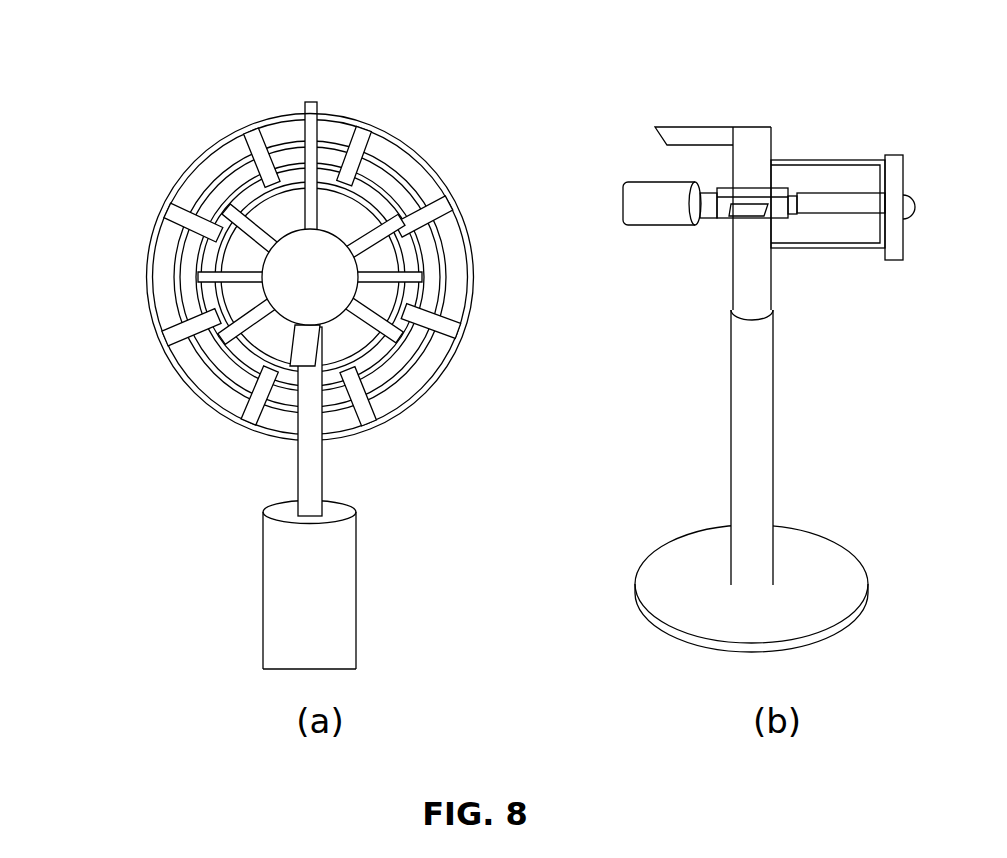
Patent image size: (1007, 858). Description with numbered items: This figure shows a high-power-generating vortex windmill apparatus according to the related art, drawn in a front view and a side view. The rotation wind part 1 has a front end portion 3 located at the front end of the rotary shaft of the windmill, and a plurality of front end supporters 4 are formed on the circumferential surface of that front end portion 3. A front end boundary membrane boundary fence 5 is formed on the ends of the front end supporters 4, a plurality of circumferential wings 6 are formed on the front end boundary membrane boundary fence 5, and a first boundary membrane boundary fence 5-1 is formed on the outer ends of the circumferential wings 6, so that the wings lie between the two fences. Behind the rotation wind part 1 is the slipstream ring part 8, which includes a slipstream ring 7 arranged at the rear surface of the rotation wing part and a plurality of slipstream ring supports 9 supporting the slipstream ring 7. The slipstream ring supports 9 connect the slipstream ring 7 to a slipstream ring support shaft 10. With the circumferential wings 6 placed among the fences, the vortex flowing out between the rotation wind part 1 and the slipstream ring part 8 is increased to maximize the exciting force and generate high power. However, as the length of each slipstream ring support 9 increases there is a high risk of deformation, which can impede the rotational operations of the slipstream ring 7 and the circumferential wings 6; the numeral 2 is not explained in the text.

The rotation wind part 1 is at (167, 393).
The rotating shaft 2 is at (820, 207).
The front end portion 3 is at (300, 279).
The front end supporter 4 is at (312, 208).
The front end boundary membrane boundary fence 5 is at (309, 212).
The first boundary membrane boundary fence 5-1 is at (277, 120).
The circumferential wing 6 is at (430, 223).
The slipstream ring 7 is at (440, 278).
The slipstream ring part 8 is at (873, 263).
The slipstream ring support 9 is at (828, 165).
The slipstream ring support shaft 10 is at (753, 140).